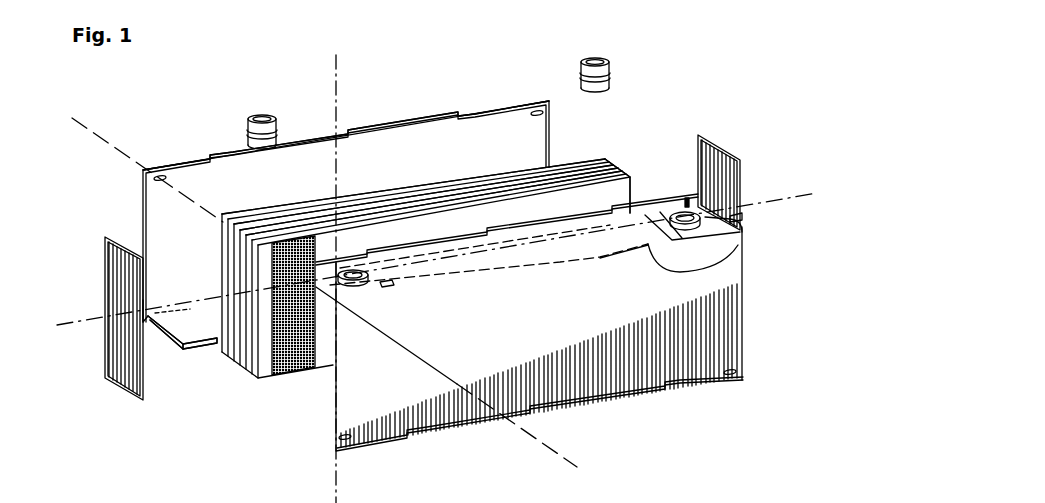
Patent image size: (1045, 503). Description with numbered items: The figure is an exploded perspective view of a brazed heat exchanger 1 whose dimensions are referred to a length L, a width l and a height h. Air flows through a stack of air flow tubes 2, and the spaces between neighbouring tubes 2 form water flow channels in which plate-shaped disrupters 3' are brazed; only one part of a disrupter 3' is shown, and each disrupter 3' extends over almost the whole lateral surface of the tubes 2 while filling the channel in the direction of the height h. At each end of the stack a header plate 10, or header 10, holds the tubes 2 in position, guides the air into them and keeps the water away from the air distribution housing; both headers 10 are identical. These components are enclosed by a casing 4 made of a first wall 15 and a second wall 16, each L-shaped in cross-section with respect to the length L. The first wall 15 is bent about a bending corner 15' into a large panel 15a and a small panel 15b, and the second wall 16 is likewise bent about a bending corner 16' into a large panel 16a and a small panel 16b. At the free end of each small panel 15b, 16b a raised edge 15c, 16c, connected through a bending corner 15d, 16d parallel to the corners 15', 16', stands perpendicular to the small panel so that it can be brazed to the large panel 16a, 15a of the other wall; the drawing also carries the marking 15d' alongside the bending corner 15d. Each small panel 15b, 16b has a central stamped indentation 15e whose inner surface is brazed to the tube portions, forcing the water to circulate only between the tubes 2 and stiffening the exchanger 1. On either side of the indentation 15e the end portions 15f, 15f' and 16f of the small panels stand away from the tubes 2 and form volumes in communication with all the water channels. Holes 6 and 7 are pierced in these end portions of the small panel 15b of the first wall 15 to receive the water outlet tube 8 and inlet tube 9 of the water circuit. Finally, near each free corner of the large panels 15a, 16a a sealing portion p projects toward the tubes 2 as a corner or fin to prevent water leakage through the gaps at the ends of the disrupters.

The heat exchanger 1 is at (670, 81).
The air flow tube 2 is at (632, 238).
The disrupter 3' is at (426, 295).
The casing 4 is at (453, 108).
The hole 6 is at (345, 295).
The hole 7 is at (688, 198).
The outlet tube 8 is at (262, 113).
The inlet tube 9 is at (597, 60).
The header plate 10 is at (103, 343).
The first wall 15 is at (565, 311).
The bending corner 15' is at (723, 256).
The large panel 15a is at (600, 380).
The small panel 15b is at (480, 265).
The raised edge 15c is at (553, 223).
The bending corner 15d is at (690, 200).
The fold line 15d' is at (475, 364).
The indentation 15e is at (440, 262).
The end portion 15f is at (416, 391).
The end portion 15f' is at (759, 356).
The second wall 16 is at (436, 272).
The bending corner 16' is at (182, 302).
The large panel 16a is at (388, 158).
The small panel 16b is at (213, 340).
The raised edge 16c is at (200, 353).
The bending corner 16d is at (180, 352).
The end portion 16f is at (150, 323).
The height h is at (117, 152).
The width l is at (315, 278).
The length L is at (68, 322).
The sealing portion p is at (340, 438).